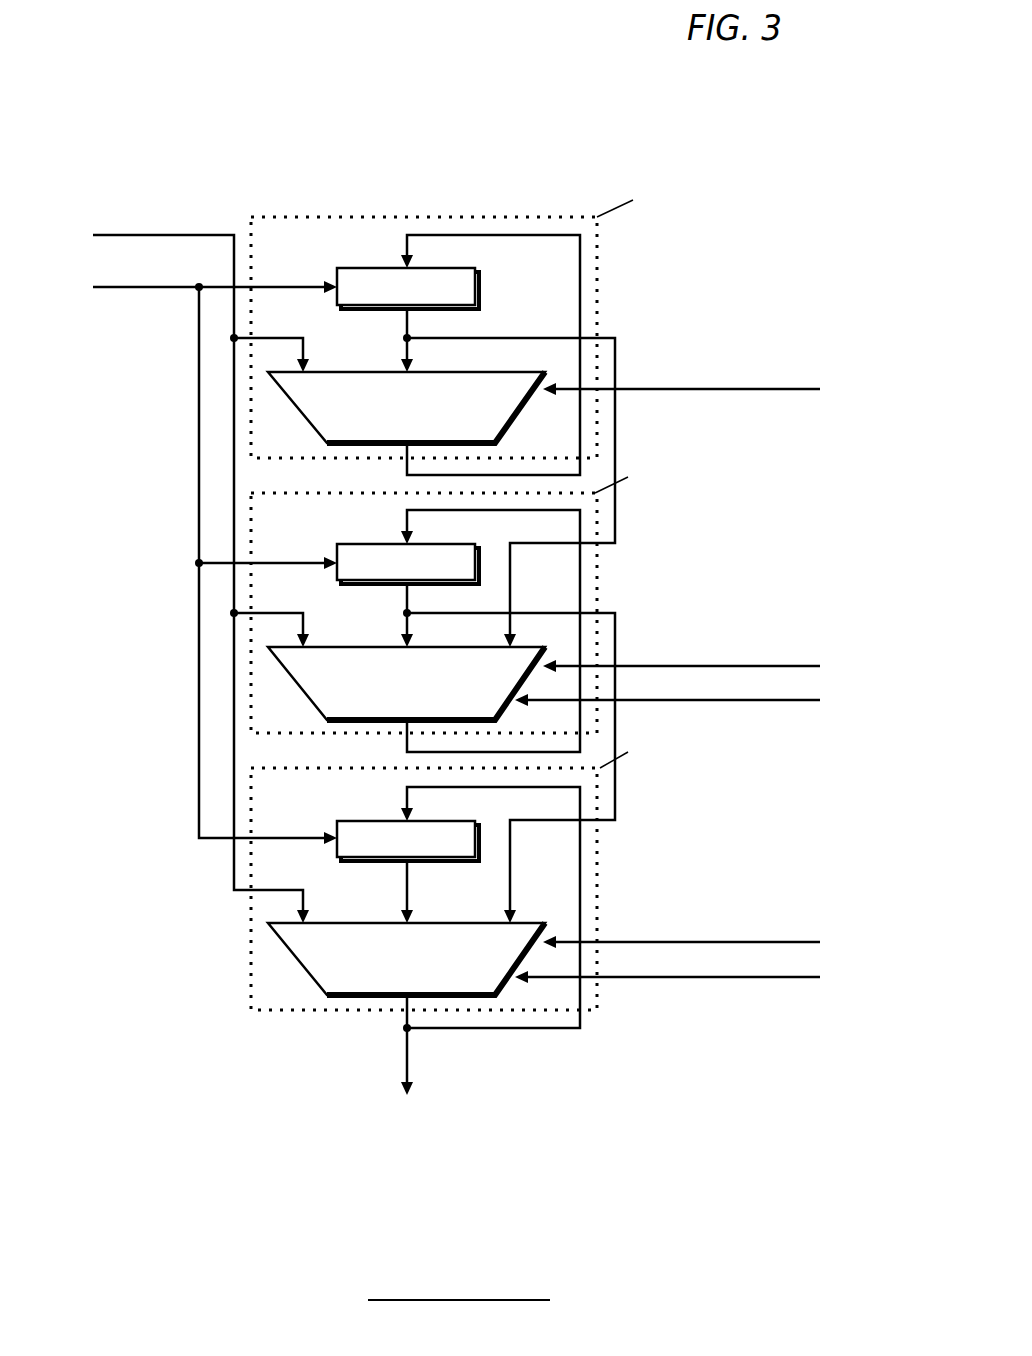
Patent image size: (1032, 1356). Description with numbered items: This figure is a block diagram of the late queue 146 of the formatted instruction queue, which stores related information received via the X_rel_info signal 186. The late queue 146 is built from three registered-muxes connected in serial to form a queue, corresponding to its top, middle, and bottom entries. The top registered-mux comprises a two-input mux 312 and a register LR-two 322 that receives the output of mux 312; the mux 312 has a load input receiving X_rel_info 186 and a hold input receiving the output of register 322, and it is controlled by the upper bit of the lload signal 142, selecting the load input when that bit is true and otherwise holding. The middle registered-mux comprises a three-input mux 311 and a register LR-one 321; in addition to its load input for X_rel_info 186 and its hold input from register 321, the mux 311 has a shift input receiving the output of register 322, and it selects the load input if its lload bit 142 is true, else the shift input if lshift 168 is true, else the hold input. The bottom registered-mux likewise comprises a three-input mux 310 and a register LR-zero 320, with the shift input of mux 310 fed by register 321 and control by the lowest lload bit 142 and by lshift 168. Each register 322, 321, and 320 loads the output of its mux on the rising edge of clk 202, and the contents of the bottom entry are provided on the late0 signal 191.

The late queue 146 is at (92, 1212).
The X_rel_info signal 186 is at (115, 235).
The clk 202 is at (115, 282).
The register LR2 322 is at (443, 298).
The mux 312 is at (422, 428).
The register LR1 321 is at (443, 574).
The mux 311 is at (422, 703).
The register LR0 320 is at (443, 851).
The mux 310 is at (422, 979).
The lload signal 142 is at (632, 388).
The lshift signal 168 is at (632, 700).
The late0 signal 191 is at (408, 1045).